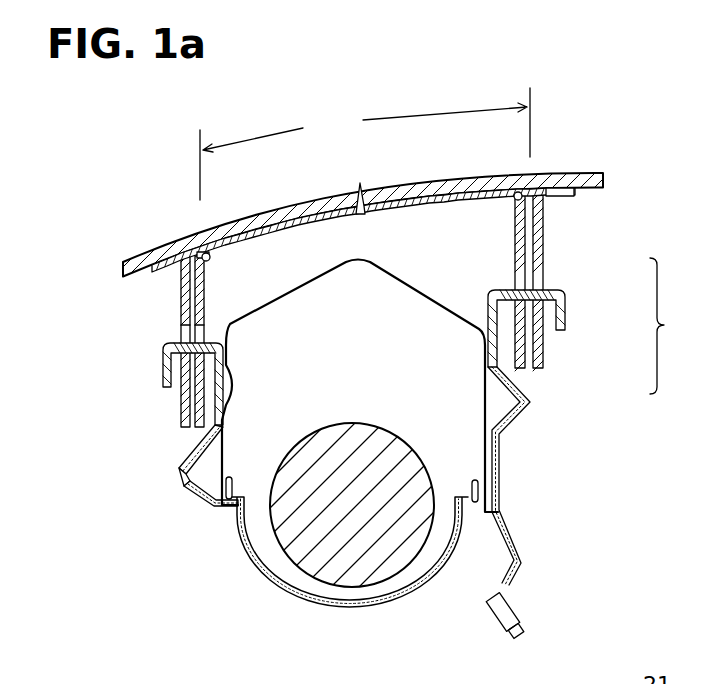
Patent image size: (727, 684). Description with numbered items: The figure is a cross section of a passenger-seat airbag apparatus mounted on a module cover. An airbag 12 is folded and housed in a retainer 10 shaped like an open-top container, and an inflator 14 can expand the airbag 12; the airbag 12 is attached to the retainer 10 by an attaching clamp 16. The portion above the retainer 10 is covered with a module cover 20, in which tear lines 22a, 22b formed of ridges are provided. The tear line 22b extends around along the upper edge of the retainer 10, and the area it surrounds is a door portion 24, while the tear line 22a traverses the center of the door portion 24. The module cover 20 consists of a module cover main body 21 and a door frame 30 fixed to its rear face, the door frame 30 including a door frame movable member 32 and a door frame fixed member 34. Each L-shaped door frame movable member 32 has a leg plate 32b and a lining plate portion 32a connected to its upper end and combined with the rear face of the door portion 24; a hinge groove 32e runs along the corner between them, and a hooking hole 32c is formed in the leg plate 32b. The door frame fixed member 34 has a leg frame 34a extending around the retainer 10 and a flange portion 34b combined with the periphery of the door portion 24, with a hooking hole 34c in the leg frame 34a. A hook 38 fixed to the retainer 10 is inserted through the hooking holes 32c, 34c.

The retainer 10 is at (342, 610).
The airbag 12 is at (293, 281).
The inflator 14 is at (302, 437).
The attaching clamp 16 is at (252, 497).
The module cover 20 is at (122, 250).
The module cover main body 21 is at (477, 173).
The tear line 22a is at (361, 213).
The tear line 22b is at (207, 252).
The door portion 24 is at (365, 144).
The door frame 30 is at (672, 326).
The door frame movable member 32 is at (530, 375).
The lining plate portion 32a is at (305, 223).
The leg plate 32b is at (513, 254).
The hooking hole 32c is at (207, 347).
The hinge groove 32e is at (213, 258).
The door frame fixed member 34 is at (560, 259).
The leg frame 34a is at (180, 298).
The flange portion 34b is at (179, 284).
The hooking hole 34c is at (180, 336).
The hook 38 is at (160, 373).